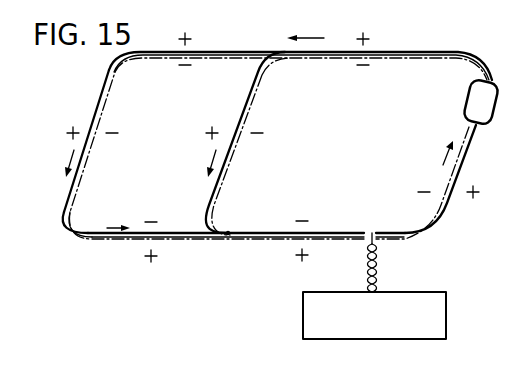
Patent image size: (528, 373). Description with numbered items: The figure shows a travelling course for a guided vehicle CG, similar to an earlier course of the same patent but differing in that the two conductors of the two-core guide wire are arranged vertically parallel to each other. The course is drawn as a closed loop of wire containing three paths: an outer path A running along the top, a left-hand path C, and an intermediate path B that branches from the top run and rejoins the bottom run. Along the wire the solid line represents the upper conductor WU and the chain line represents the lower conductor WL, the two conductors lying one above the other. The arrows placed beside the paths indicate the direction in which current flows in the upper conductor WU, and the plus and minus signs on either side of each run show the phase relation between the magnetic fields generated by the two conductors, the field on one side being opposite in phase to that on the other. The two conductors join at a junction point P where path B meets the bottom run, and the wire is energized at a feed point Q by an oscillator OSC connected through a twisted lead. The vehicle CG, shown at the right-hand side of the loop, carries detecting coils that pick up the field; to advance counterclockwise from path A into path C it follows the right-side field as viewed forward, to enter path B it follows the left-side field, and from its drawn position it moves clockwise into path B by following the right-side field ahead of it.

The path A is at (277, 159).
The path B is at (247, 111).
The path C is at (108, 102).
The vehicle CG is at (472, 100).
The upper conductor WU is at (189, 233).
The lower conductor WL is at (192, 241).
The junction point P is at (233, 231).
The feed point Q is at (371, 232).
The oscillator OSC is at (303, 313).